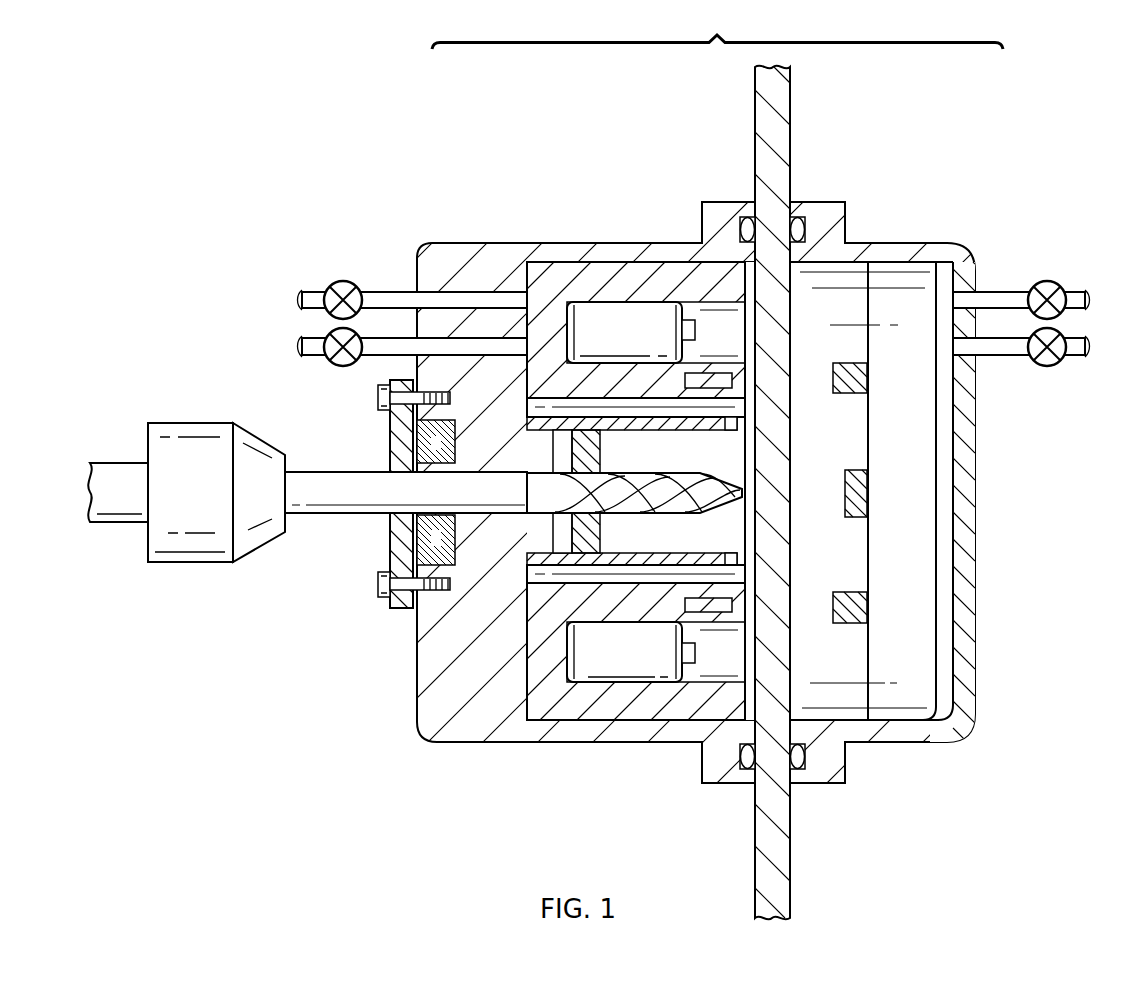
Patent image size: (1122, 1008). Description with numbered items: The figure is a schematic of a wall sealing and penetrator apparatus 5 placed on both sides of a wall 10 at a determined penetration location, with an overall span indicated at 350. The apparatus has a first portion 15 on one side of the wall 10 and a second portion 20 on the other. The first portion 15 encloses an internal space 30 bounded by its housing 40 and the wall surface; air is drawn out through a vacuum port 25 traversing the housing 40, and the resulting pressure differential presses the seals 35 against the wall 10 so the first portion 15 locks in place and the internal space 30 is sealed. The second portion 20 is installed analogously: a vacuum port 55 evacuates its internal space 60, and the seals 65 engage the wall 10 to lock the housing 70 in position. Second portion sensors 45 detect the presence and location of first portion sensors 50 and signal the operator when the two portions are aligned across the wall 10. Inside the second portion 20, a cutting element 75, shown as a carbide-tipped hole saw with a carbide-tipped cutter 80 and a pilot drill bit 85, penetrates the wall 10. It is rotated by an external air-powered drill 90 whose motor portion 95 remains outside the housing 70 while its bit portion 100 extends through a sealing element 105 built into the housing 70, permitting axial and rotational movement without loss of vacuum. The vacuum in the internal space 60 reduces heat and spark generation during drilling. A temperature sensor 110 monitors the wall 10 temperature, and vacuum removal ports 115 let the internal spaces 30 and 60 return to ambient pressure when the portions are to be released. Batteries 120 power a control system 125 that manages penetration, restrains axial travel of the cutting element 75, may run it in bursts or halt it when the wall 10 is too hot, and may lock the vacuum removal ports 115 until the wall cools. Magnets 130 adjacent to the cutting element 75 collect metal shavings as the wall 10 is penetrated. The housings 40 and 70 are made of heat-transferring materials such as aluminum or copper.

The wall sealing and penetrator apparatus 5 is at (223, 120).
The wall 10 is at (792, 893).
The first portion 15 is at (782, 558).
The second portion 20 is at (772, 482).
The vacuum port 25 is at (1000, 290).
The internal space 30 is at (897, 547).
The seals 35 is at (798, 217).
The housing 40 is at (966, 640).
The second portion sensors 45 is at (727, 615).
The first portion sensors 50 is at (858, 605).
The vacuum port 55 is at (384, 290).
The internal space 60 is at (693, 675).
The seals 65 is at (746, 217).
The housing 70 is at (473, 732).
The cutting element 75 is at (494, 566).
The carbide-tipped cutter 80 is at (706, 440).
The pilot drill bit 85 is at (623, 512).
The external air-powered drill 90 is at (172, 587).
The motor portion 95 is at (183, 423).
The bit portion 100 is at (310, 472).
The sealing element 105 is at (392, 533).
The temperature sensor 110 is at (858, 492).
The vacuum removal ports 115 is at (380, 362).
The batteries 120 is at (637, 320).
The control system 125 is at (612, 270).
The magnets 130 is at (600, 463).
The overall width 350 is at (717, 26).